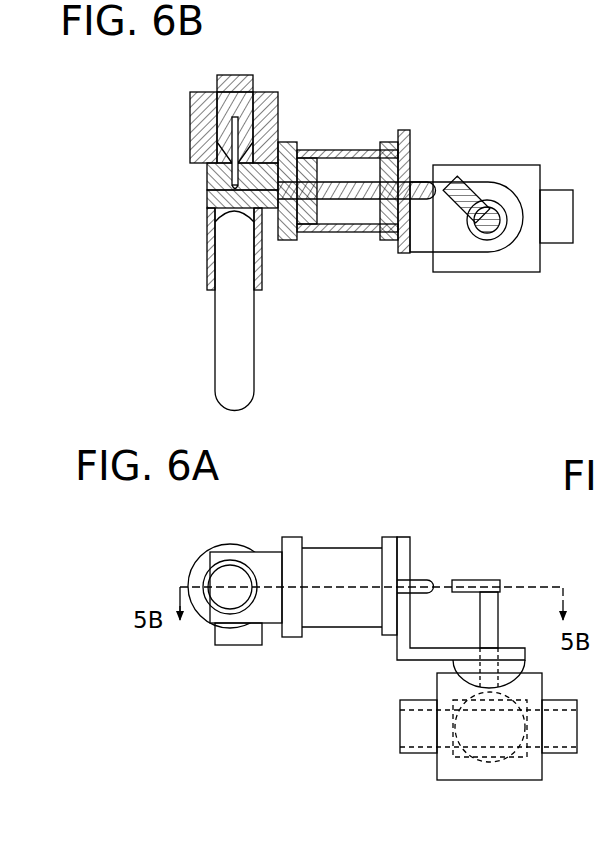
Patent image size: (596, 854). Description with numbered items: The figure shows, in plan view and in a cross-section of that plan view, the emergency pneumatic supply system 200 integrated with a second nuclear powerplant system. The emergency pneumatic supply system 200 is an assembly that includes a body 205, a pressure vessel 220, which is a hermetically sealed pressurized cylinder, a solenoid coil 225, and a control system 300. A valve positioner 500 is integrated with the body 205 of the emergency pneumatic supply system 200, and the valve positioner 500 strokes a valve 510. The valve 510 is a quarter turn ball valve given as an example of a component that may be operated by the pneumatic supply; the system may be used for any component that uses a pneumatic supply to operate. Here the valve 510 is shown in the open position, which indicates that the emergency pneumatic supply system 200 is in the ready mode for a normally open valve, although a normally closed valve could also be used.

In FIG. 6B, the emergency pneumatic supply system 200 is at (171, 258).
In FIG. 6A, the emergency pneumatic supply system 200 is at (188, 546).
In FIG. 6B, the body 205 is at (205, 183).
In FIG. 6B, the pressure vessel 220 is at (255, 327).
In FIG. 6B, the solenoid coil 225 is at (190, 123).
In FIG. 6A, the solenoid coil 225 is at (197, 573).
In FIG. 6B, the control system 300 is at (280, 100).
In FIG. 6A, the control system 300 is at (200, 625).
In FIG. 6B, the valve positioner 500 is at (356, 251).
In FIG. 6A, the valve positioner 500 is at (330, 632).
In FIG. 6B, the valve 510 is at (485, 276).
In FIG. 6A, the valve 510 is at (571, 762).